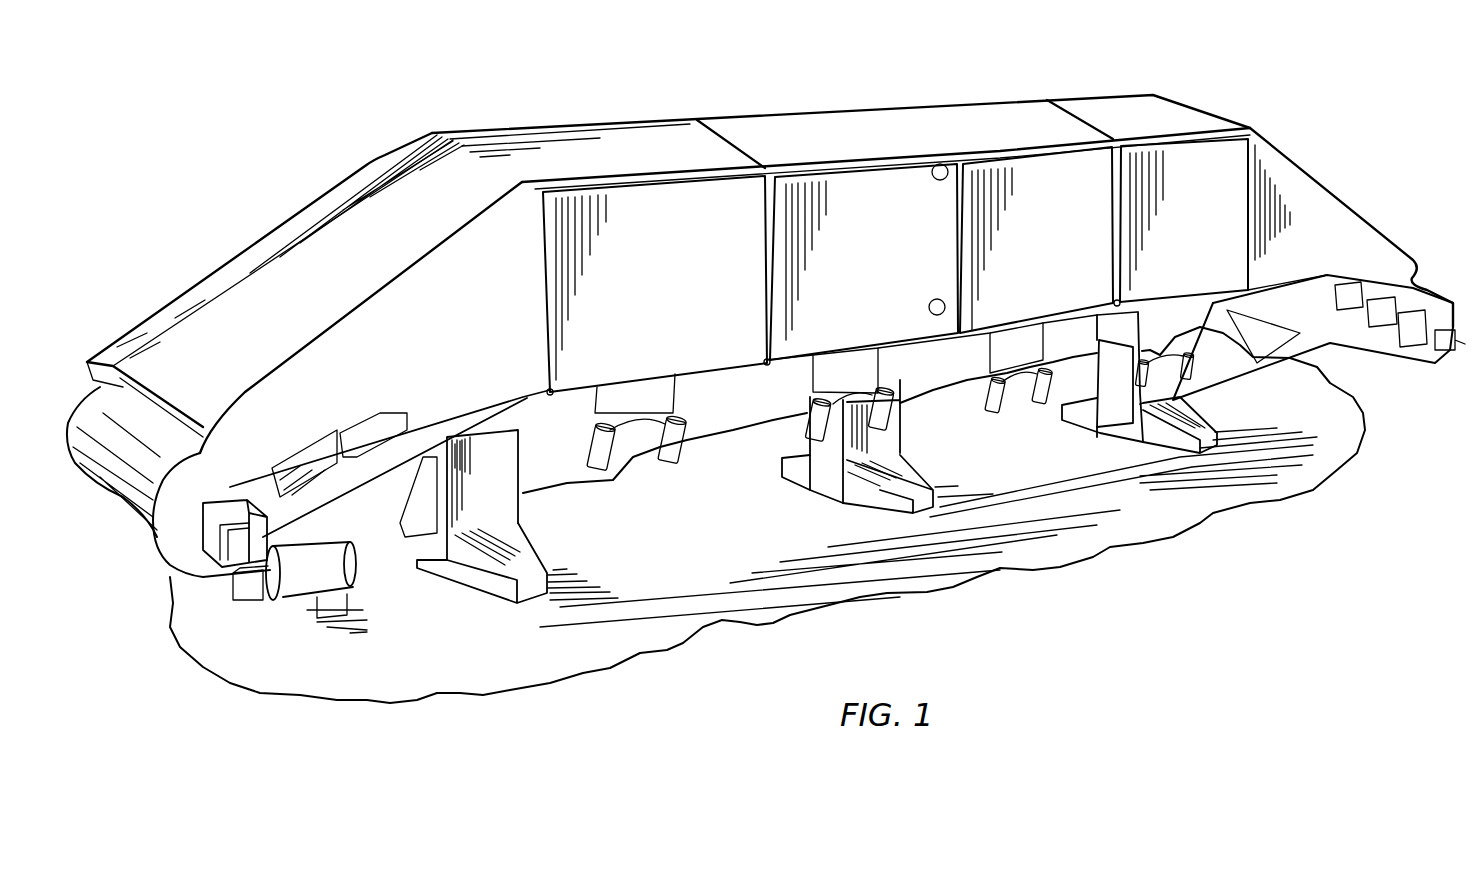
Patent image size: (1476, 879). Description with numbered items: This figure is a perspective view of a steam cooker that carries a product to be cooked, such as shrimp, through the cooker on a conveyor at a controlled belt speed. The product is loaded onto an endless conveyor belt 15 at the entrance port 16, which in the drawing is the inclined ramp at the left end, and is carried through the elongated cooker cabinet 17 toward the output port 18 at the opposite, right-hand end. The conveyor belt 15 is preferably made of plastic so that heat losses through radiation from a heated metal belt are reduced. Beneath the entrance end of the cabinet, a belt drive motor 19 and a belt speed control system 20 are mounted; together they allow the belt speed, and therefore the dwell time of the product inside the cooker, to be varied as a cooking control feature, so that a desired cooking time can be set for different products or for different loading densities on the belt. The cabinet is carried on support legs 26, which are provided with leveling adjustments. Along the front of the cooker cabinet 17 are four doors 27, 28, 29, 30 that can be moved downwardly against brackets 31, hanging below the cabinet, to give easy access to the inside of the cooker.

The conveyor belt 15 is at (135, 512).
The entrance port 16 is at (170, 392).
The cooker cabinet 17 is at (813, 86).
The output port 18 is at (1449, 370).
The belt drive motor 19 is at (353, 585).
The belt speed control system 20 is at (212, 591).
The support legs 26 is at (538, 505).
The door 27 is at (672, 196).
The door 28 is at (876, 182).
The door 29 is at (1040, 170).
The door 30 is at (1178, 155).
The brackets 31 is at (667, 477).